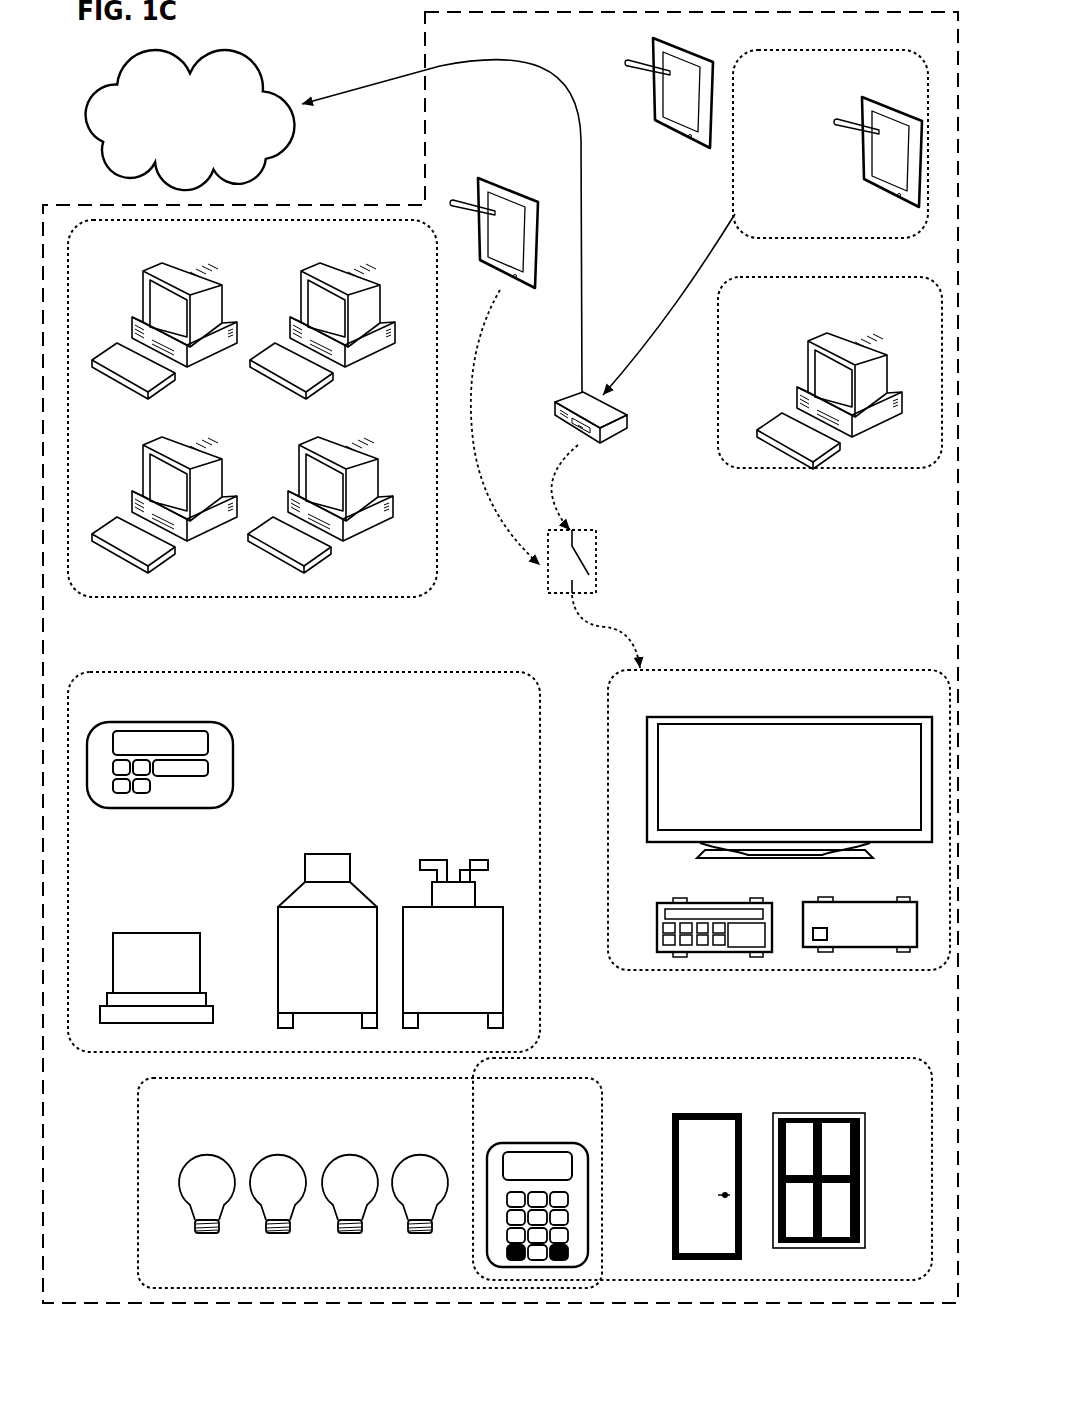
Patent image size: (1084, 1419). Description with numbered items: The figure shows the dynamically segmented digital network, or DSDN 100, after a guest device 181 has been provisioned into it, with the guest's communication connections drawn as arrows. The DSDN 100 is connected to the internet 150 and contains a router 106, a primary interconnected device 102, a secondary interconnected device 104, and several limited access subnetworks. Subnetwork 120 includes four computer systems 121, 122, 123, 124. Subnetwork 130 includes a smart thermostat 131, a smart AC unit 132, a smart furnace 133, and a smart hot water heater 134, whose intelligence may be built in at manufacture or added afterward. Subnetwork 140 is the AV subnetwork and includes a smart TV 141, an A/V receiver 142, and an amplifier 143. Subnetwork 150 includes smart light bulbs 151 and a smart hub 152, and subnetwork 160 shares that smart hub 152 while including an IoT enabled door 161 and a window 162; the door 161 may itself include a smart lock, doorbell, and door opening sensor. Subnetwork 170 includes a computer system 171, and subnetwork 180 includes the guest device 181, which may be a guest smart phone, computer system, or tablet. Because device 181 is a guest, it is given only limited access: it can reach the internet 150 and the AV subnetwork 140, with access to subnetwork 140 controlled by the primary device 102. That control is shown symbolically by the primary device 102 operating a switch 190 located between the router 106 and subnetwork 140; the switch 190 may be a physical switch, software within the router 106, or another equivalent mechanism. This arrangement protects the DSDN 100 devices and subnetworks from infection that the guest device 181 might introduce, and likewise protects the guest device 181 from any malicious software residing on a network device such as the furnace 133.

The DSDN 100 is at (420, 20).
The primary interconnected device 102 is at (490, 207).
The secondary interconnected device 104 is at (666, 121).
The router 106 is at (614, 438).
The subnetwork 120 is at (252, 408).
The computer system 121 is at (225, 310).
The computer system 122 is at (388, 310).
The computer system 123 is at (230, 478).
The computer system 124 is at (388, 478).
The subnetwork 130 is at (304, 862).
The smart thermostat 131 is at (248, 728).
The smart AC unit 132 is at (178, 927).
The smart furnace 133 is at (316, 850).
The smart hot water heater 134 is at (483, 850).
The subnetwork 140 is at (779, 820).
The smart TV 141 is at (789, 787).
The A/V receiver 142 is at (672, 896).
The amplifier 143 is at (860, 924).
The subnetwork 150 is at (190, 120).
The smart light bulbs 151 is at (367, 1135).
The smart hub 152 is at (527, 1137).
The subnetwork 160 is at (702, 1169).
The IoT enabled door 161 is at (707, 1186).
The window 162 is at (873, 1167).
The subnetwork 170 is at (830, 372).
The computer system 171 is at (890, 368).
The subnetwork 180 is at (830, 144).
The guest device 181 is at (832, 190).
The switch 190 is at (607, 556).